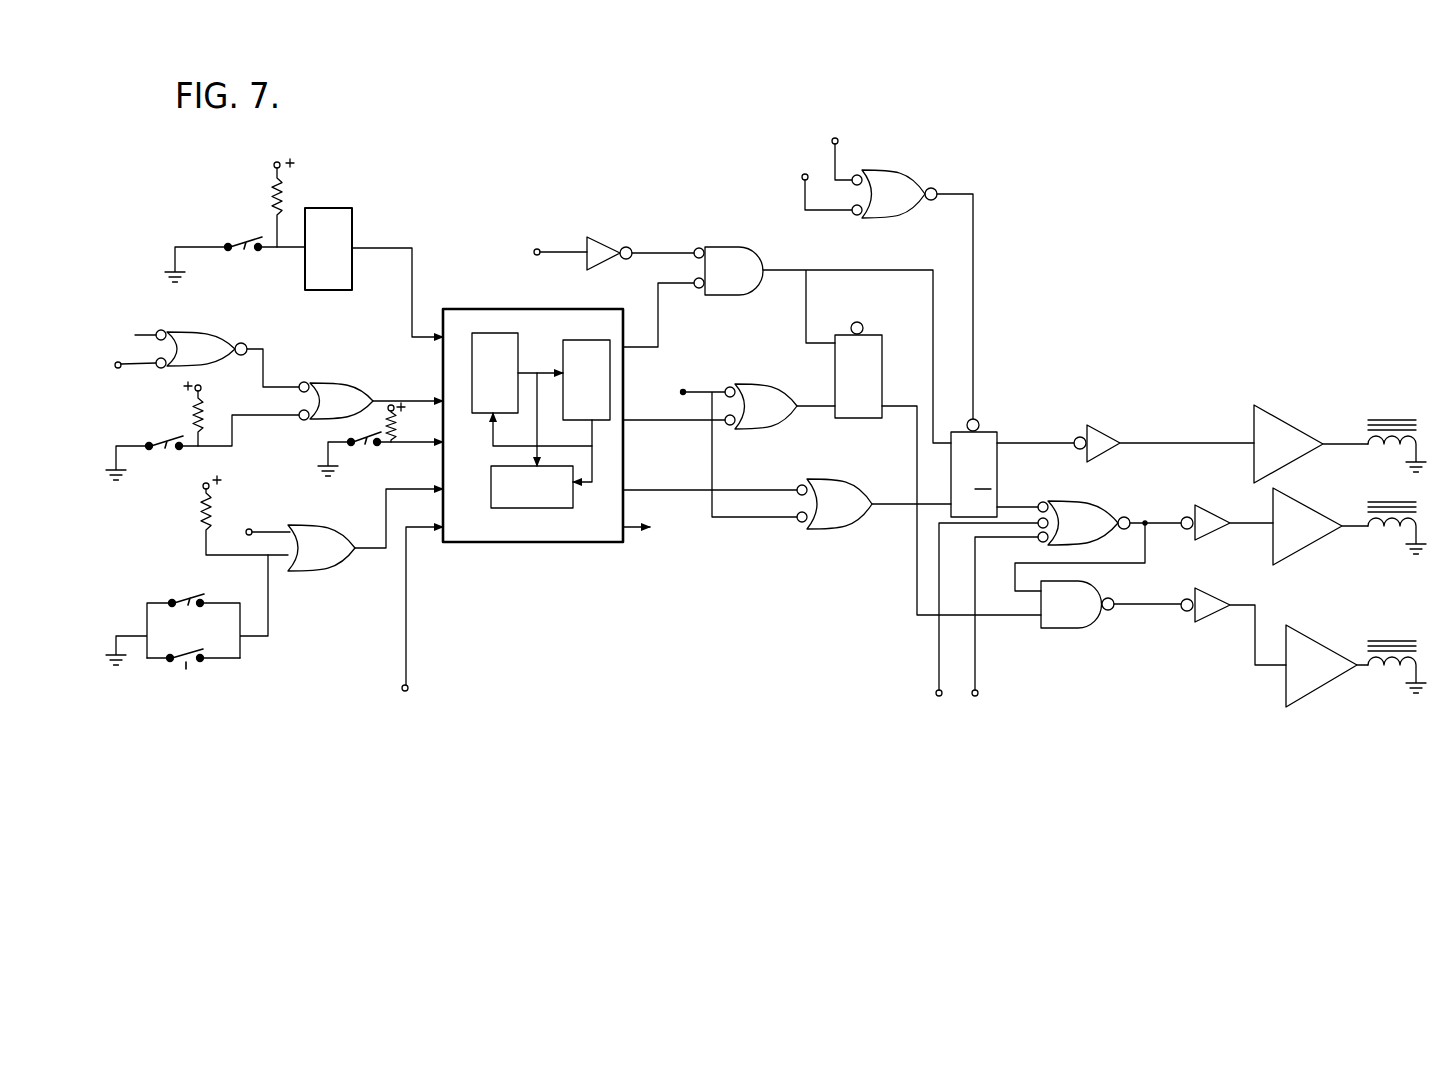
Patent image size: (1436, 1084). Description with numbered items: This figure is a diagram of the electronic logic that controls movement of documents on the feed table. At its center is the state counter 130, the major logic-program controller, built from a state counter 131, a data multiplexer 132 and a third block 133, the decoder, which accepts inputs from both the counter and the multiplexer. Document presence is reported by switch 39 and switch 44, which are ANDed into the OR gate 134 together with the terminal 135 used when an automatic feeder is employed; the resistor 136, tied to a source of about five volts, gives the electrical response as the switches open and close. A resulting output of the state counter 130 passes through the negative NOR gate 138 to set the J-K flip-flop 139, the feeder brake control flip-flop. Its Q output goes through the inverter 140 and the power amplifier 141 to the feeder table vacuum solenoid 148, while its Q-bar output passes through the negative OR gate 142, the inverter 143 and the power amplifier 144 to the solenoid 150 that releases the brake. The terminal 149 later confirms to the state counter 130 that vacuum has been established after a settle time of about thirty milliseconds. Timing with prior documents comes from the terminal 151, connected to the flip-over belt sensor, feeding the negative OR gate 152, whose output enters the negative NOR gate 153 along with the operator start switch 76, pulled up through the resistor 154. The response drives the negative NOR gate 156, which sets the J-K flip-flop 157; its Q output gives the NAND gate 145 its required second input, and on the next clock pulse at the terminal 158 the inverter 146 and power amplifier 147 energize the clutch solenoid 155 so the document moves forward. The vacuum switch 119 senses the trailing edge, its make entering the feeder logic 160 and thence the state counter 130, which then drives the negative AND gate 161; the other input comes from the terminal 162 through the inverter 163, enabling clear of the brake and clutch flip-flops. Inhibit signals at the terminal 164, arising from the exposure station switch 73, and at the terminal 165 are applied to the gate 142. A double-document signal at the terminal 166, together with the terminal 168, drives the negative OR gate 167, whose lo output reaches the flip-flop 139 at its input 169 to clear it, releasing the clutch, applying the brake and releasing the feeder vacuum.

The switch 39 is at (187, 610).
The switch 44 is at (193, 673).
The switch 73 is at (380, 440).
The start switch 76 is at (202, 447).
The vacuum switch 119 is at (235, 223).
The state counter 130 is at (562, 447).
The state counter 131 is at (478, 415).
The data multiplexer 132 is at (593, 409).
The counter 133 is at (573, 493).
The OR gate 134 is at (352, 538).
The terminal 135 is at (256, 523).
The resistor 136 is at (220, 515).
The negative NOR gate 138 is at (836, 485).
The J-K flip-flop 139 is at (997, 478).
The inverter 140 is at (1103, 447).
The power amplifier 141 is at (1285, 421).
The negative OR gate 142 is at (1083, 510).
The inverter 143 is at (1218, 519).
The power amplifier 144 is at (1319, 513).
The NAND gate 145 is at (1092, 626).
The inverter 146 is at (1211, 620).
The power amplifier 147 is at (1314, 638).
The feeder table vacuum solenoid 148 is at (1391, 452).
The terminal 149 is at (413, 676).
The solenoid 150 is at (1391, 534).
The terminal 151 is at (134, 384).
The negative OR gate 152 is at (236, 334).
The negative NOR gate 153 is at (362, 395).
The resistor 154 is at (207, 411).
The solenoid 155 is at (1391, 672).
The negative NOR gate 156 is at (778, 395).
The J-K flip-flop 157 is at (882, 360).
The terminal 158 is at (861, 303).
The feeder logic 160 is at (357, 212).
The negative AND gate 161 is at (757, 248).
The terminal 162 is at (544, 243).
The inverter 163 is at (606, 250).
The terminal 164 is at (936, 688).
The terminal 165 is at (983, 680).
The terminal 166 is at (838, 141).
The NOR gate 167 is at (910, 191).
The input terminal 168 is at (802, 177).
The clock input 169 is at (979, 427).